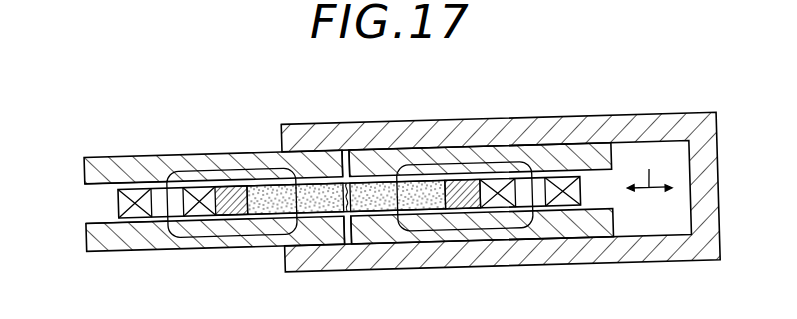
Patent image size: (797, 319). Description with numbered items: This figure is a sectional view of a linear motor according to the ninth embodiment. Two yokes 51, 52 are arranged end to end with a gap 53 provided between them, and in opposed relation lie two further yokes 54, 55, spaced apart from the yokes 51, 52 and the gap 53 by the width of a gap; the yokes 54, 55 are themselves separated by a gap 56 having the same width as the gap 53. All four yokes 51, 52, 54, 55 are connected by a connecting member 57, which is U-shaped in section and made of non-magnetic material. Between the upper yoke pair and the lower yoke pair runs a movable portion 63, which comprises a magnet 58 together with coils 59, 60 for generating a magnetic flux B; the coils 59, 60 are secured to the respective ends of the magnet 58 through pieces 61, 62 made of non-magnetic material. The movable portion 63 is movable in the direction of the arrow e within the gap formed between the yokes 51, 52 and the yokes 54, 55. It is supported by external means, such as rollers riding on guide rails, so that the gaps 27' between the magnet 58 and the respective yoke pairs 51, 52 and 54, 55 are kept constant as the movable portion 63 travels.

The yoke 51 is at (118, 167).
The yoke 52 is at (568, 163).
The gap 53 is at (361, 169).
The yoke 54 is at (127, 240).
The yoke 55 is at (524, 248).
The gap 56 is at (356, 247).
The connecting member 57 is at (701, 248).
The magnet 58 is at (321, 203).
The coil 59 is at (196, 215).
The coil 60 is at (582, 207).
The piece 61 is at (230, 190).
The piece 62 is at (462, 217).
The movable portion 63 is at (110, 202).
The magnetic flux B is at (192, 174).
The gap 27' is at (96, 211).
The arrow e is at (649, 168).